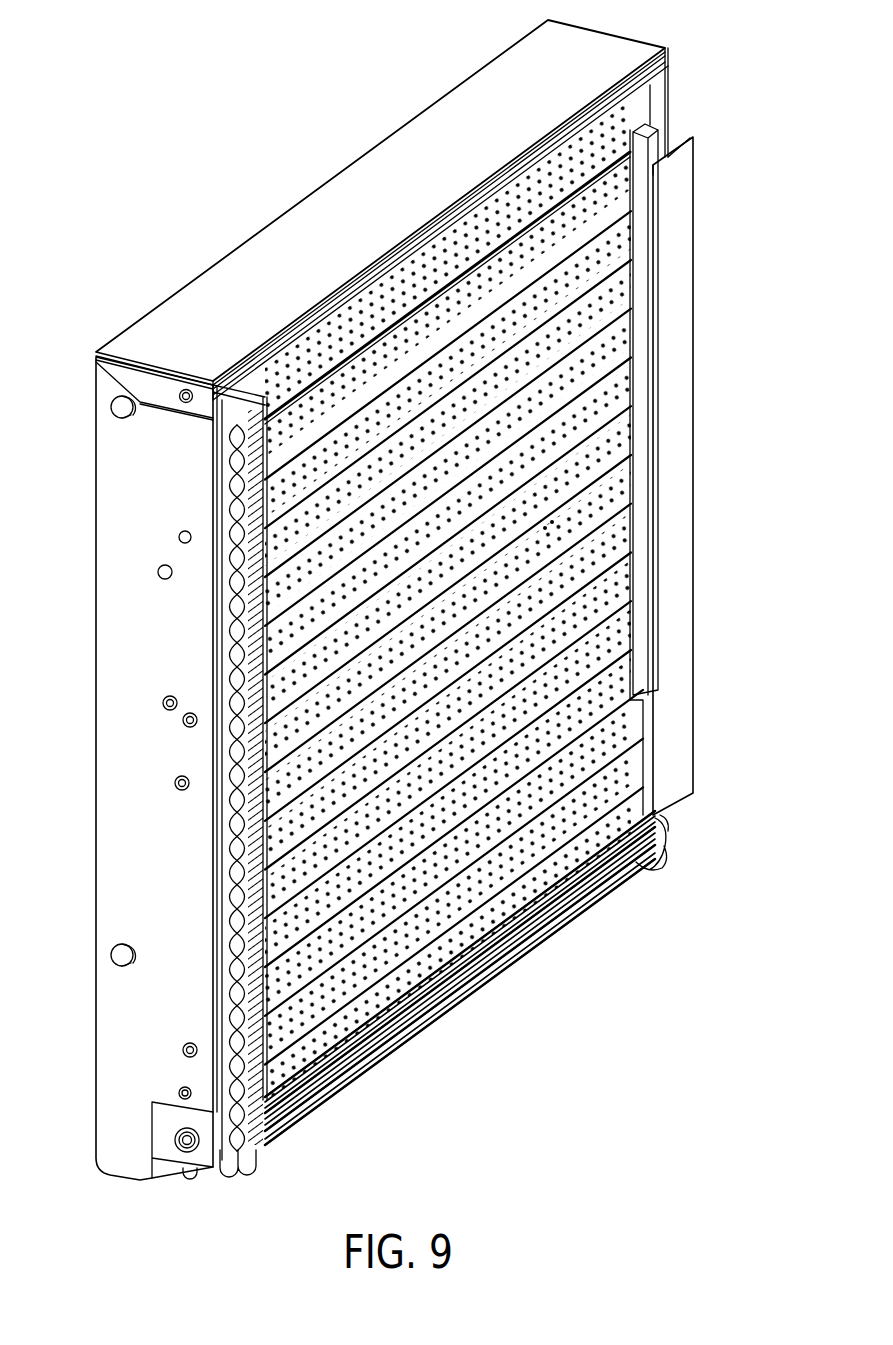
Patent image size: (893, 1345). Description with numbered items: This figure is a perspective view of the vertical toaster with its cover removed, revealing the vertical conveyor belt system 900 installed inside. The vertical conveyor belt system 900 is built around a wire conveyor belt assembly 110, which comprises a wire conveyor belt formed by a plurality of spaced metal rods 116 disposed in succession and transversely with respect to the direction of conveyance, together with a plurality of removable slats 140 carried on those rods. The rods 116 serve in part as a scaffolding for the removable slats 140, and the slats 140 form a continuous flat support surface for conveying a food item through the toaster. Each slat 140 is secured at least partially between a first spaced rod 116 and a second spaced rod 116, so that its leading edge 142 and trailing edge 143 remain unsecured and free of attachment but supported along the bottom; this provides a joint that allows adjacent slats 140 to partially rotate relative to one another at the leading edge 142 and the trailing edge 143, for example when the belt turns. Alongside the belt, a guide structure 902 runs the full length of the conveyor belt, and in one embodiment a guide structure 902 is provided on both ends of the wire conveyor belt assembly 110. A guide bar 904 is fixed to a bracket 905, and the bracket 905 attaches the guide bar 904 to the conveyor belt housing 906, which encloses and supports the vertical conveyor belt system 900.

The vertical conveyor belt system 900 is at (196, 111).
The spaced metal rods 116 is at (430, 300).
The removable slats 140 is at (590, 314).
The leading edge 142 is at (563, 524).
The trailing edge 143 is at (544, 522).
The guide bar 904 is at (649, 128).
The bracket 905 is at (683, 136).
The guide structure 902 is at (683, 293).
The conveyor belt housing 906 is at (115, 606).
The wire conveyor belt assembly 110 is at (505, 1002).